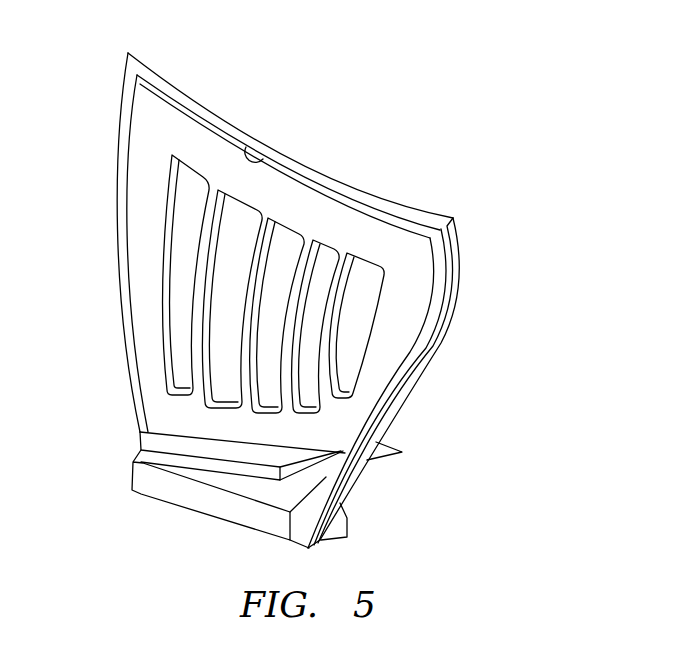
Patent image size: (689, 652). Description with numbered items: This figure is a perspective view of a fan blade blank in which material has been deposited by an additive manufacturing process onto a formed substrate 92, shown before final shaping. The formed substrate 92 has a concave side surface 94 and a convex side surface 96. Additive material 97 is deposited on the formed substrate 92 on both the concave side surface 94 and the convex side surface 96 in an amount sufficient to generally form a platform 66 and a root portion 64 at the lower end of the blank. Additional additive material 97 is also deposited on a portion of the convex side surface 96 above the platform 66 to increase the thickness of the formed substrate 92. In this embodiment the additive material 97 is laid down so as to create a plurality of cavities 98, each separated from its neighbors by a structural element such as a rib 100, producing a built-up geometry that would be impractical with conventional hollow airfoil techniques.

The root portion 64 is at (386, 515).
The platform 66 is at (403, 448).
The formed substrate 92 is at (470, 224).
The concave side surface 94 is at (388, 200).
The convex side surface 96 is at (247, 142).
The additive material 97 is at (153, 93).
The cavities 98 is at (267, 332).
The rib 100 is at (248, 377).